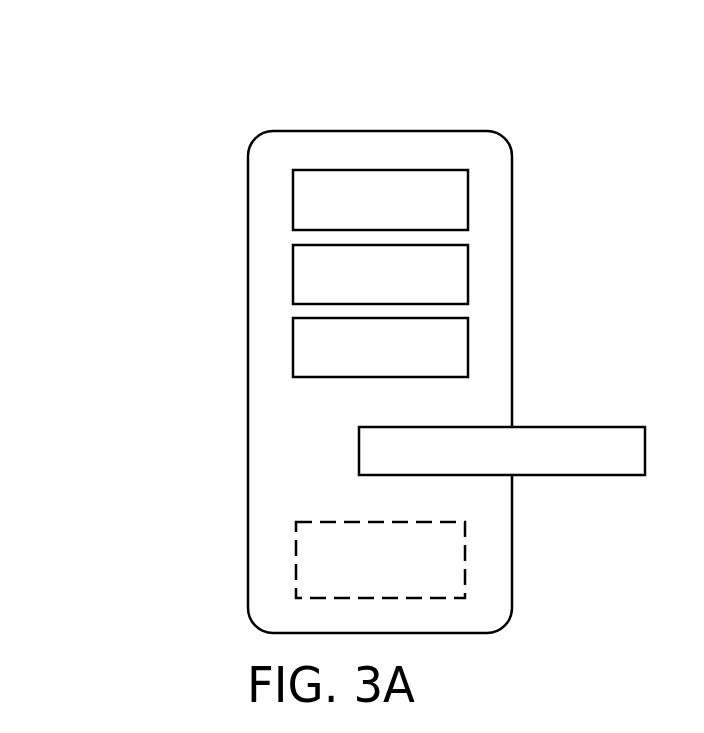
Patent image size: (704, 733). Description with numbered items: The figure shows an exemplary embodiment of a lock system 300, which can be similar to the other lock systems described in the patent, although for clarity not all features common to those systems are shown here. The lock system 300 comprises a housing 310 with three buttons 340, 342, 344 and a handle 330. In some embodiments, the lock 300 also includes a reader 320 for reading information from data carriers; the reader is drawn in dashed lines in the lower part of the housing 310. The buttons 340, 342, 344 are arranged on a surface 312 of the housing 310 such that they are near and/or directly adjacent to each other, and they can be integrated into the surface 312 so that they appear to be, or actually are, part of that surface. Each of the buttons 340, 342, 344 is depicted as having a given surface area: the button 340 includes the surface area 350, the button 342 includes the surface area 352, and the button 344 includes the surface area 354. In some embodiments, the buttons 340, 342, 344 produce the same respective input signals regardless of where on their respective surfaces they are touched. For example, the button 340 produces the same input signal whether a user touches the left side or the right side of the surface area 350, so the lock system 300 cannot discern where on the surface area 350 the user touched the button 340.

The lock system 300 is at (203, 105).
The housing 310 is at (329, 350).
The surface 312 is at (268, 345).
The reader 320 is at (472, 562).
The handle 330 is at (548, 427).
The button 340 is at (386, 187).
The button 342 is at (386, 261).
The button 344 is at (386, 334).
The surface area 350 is at (306, 193).
The surface area 352 is at (306, 268).
The surface area 354 is at (306, 342).